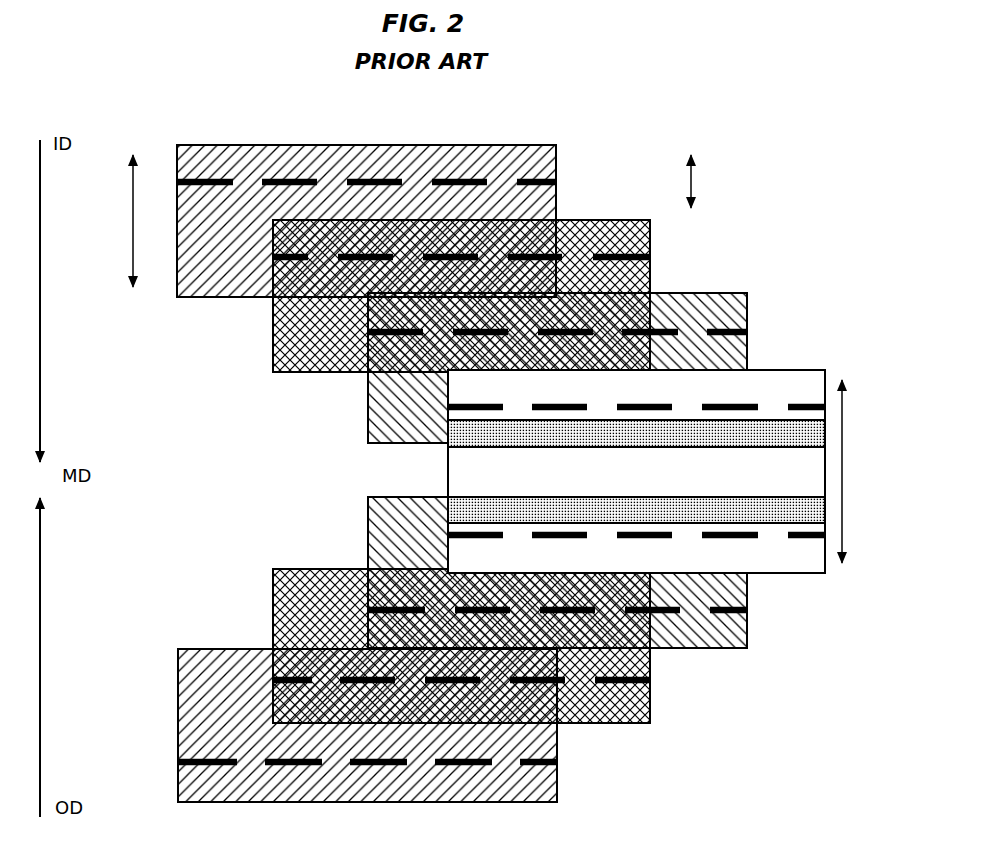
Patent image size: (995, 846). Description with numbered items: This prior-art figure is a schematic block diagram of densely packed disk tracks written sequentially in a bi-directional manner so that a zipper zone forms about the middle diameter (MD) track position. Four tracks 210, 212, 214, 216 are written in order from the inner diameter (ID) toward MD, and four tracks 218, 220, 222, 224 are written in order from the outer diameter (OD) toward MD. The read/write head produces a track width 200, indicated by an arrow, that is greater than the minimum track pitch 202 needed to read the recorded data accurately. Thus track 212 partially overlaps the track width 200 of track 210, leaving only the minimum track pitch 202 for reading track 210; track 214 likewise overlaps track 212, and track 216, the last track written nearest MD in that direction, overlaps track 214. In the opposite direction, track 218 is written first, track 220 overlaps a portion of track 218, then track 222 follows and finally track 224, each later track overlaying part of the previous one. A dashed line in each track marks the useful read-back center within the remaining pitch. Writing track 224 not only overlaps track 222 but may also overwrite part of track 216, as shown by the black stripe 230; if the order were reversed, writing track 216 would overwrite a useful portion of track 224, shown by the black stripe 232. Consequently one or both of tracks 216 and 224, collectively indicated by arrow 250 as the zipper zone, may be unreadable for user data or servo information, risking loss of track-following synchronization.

The track width 200 is at (133, 212).
The minimum track pitch 202 is at (692, 178).
The track 210 is at (210, 301).
The track 212 is at (262, 350).
The track 214 is at (358, 409).
The track 216 is at (796, 359).
The track 218 is at (169, 684).
The track 220 is at (264, 601).
The track 222 is at (358, 529).
The track 224 is at (803, 584).
The black stripe 230 is at (464, 452).
The black stripe 232 is at (464, 492).
The zipper zone 250 is at (842, 402).